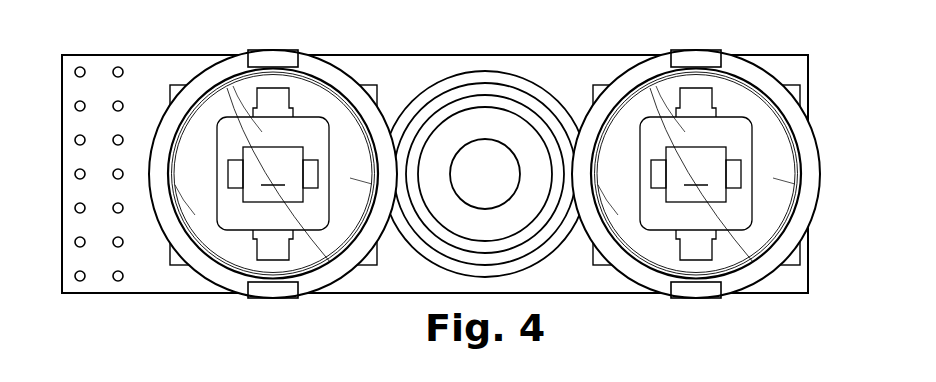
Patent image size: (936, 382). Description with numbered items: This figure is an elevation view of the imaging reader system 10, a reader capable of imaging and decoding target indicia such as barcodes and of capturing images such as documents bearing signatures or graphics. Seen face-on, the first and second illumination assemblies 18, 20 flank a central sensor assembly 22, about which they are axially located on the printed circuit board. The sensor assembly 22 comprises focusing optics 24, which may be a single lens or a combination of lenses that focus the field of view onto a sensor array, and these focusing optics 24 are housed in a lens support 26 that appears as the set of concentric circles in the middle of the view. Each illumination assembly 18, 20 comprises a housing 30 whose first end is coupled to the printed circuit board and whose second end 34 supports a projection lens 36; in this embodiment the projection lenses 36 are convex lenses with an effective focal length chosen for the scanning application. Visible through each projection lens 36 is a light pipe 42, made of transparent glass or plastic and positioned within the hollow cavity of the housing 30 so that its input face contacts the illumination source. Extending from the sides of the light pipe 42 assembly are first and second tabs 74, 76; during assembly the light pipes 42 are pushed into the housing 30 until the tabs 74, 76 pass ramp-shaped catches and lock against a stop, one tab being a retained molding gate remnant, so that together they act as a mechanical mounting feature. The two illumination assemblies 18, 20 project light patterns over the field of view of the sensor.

The imaging reader system 10 is at (856, 78).
The first illumination assembly 18 is at (835, 212).
The second illumination assembly 20 is at (255, 311).
The sensor assembly 22 is at (401, 268).
The focusing optics 24 is at (502, 170).
The lens support 26 is at (502, 72).
The housing 30 is at (822, 170).
The second end 34 is at (322, 278).
The projection lens 36 is at (203, 128).
The light pipe 42 is at (485, 174).
The first tab 74 is at (310, 183).
The second tab 76 is at (238, 175).